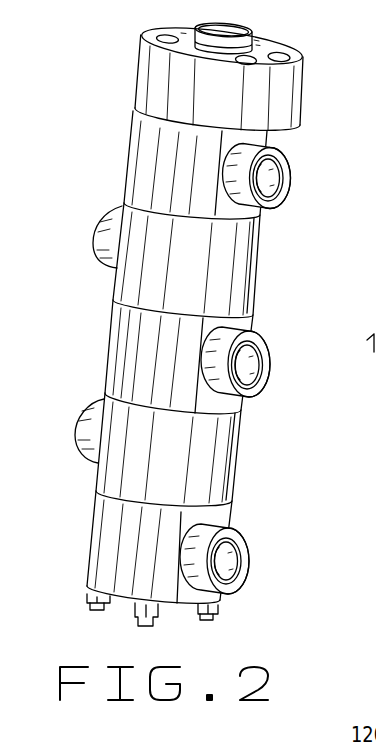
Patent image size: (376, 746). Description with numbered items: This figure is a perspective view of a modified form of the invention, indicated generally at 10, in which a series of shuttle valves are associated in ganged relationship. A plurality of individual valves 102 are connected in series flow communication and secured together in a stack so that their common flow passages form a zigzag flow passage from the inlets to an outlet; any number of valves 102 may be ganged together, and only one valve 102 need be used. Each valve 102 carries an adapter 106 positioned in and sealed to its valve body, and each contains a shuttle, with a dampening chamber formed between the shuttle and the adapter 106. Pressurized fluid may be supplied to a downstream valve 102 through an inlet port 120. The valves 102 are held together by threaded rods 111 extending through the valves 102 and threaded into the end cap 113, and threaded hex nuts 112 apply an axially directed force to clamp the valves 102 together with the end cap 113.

The modular tool assembly 10 is at (195, 323).
The valve 102 is at (128, 152).
The adapter 106 is at (243, 396).
The threaded rod 111 is at (137, 624).
The threaded hex nut 112 is at (83, 588).
The end cap 113 is at (303, 72).
The inlet port 120 is at (267, 370).